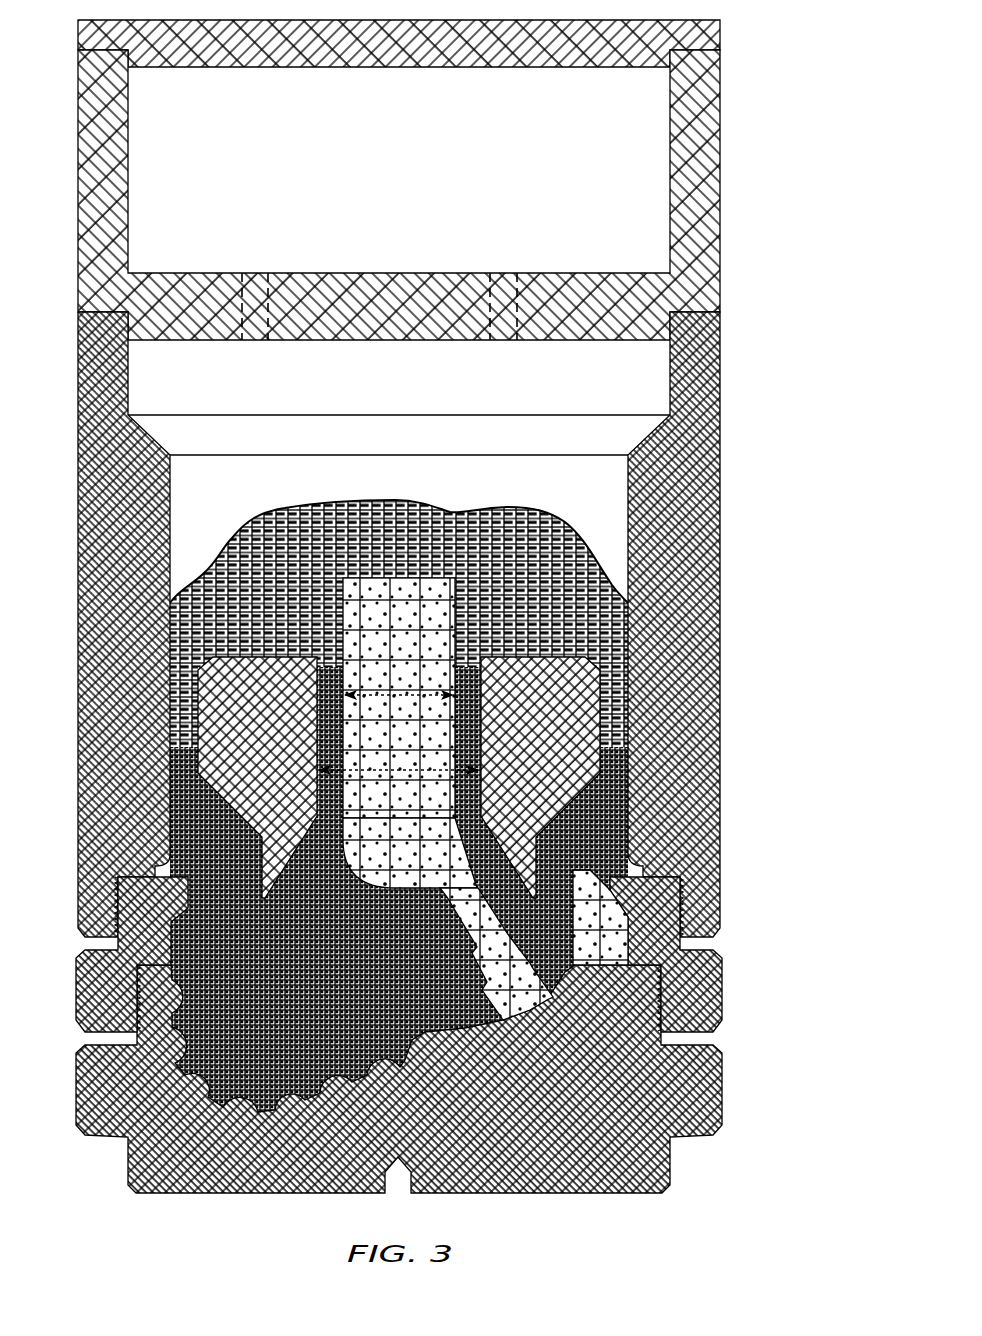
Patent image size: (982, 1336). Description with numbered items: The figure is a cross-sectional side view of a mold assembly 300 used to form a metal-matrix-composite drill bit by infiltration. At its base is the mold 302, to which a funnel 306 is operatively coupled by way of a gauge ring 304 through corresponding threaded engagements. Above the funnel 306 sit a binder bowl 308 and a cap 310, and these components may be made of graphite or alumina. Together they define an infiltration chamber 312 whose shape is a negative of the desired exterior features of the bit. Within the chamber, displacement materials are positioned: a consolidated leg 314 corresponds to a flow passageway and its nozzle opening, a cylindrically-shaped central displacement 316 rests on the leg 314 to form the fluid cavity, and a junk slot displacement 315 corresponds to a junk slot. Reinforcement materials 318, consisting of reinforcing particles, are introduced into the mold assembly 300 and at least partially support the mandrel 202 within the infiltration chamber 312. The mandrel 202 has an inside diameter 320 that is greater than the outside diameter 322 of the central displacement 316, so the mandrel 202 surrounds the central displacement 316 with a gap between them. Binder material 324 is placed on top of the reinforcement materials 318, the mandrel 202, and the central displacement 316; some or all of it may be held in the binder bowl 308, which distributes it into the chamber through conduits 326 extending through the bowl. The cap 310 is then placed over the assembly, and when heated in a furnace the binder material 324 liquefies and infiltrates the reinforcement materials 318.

The mold assembly 300 is at (532, 1200).
The mold 302 is at (742, 1088).
The gauge ring 304 is at (742, 990).
The funnel 306 is at (742, 546).
The binder bowl 308 is at (726, 232).
The cap 310 is at (726, 33).
The infiltration chamber 312 is at (240, 497).
The consolidated leg 314 is at (531, 1000).
The junk slot displacement 315 is at (618, 940).
The central displacement 316 is at (417, 651).
The reinforcement materials 318 is at (320, 998).
The inside diameter 320 is at (330, 770).
The outside diameter 322 is at (408, 697).
The binder material 324 is at (447, 510).
The conduits 326 is at (242, 313).
The mandrel 202 is at (556, 738).